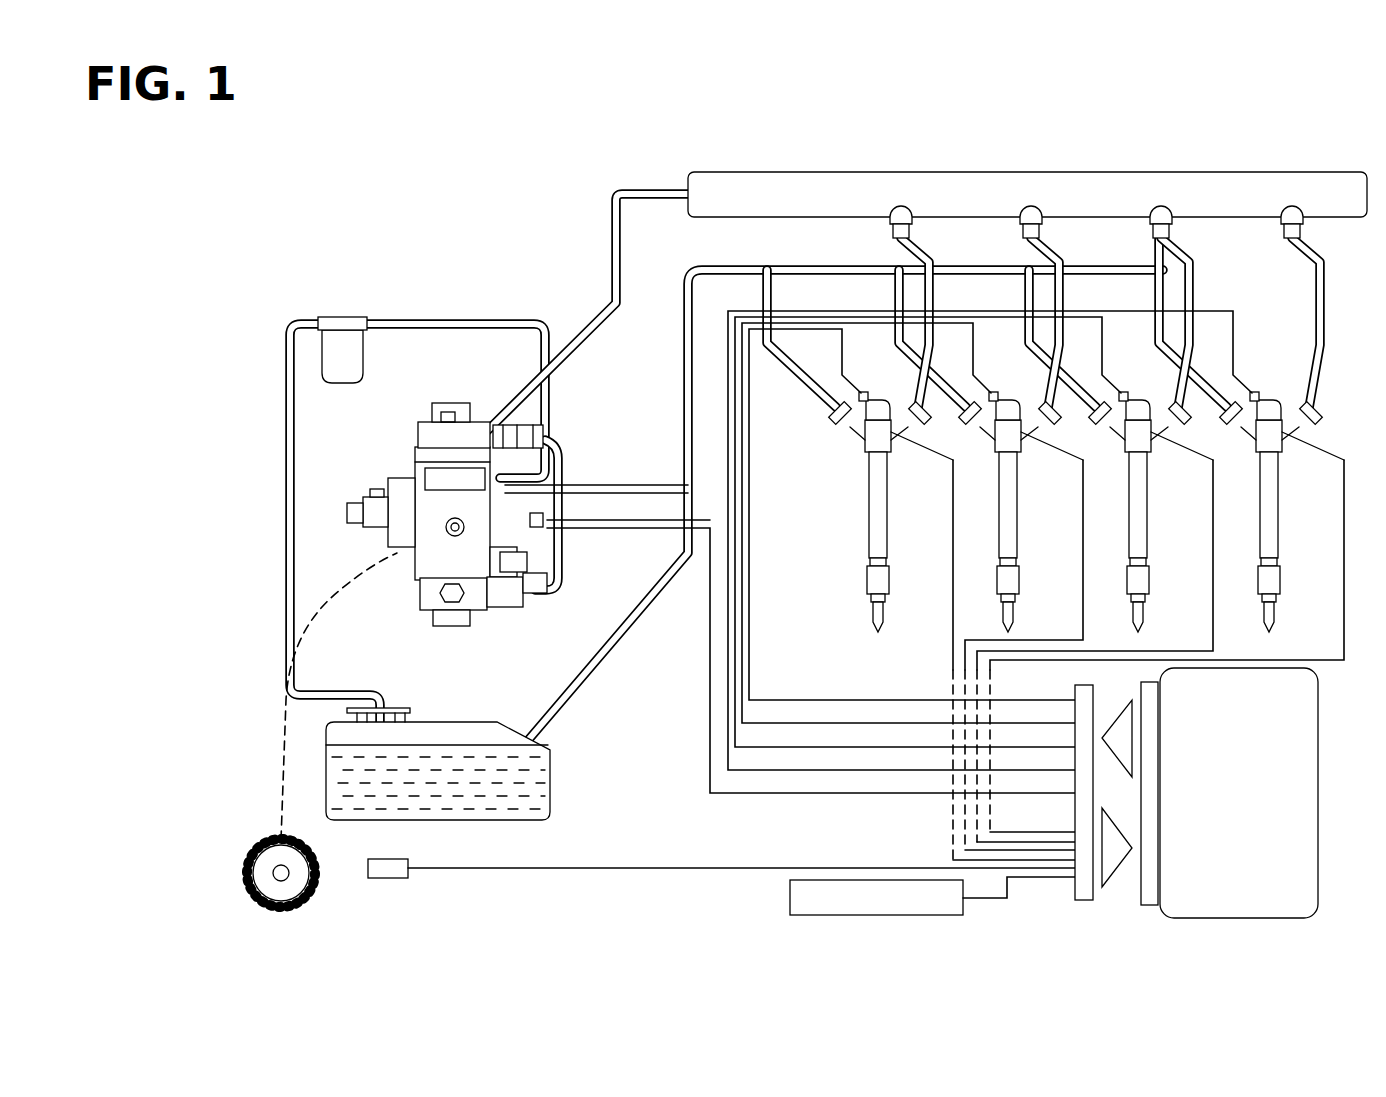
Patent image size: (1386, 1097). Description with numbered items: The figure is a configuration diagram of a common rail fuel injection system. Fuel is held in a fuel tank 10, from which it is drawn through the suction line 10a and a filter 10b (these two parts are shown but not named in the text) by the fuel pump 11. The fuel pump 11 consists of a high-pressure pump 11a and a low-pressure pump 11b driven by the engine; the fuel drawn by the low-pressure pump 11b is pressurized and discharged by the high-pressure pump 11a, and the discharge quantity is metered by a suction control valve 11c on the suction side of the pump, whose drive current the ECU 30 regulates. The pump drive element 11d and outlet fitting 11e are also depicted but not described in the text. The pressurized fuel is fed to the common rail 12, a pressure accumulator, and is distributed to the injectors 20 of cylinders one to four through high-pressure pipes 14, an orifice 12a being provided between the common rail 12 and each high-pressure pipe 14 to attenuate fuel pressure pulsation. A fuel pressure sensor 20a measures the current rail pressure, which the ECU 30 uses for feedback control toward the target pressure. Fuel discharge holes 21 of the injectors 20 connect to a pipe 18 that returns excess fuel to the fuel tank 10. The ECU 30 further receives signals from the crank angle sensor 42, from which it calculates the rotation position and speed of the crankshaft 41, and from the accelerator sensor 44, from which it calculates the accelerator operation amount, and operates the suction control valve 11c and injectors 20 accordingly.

The fuel tank 10 is at (474, 720).
The fuel suction pipe 10a is at (284, 500).
The fuel filter 10b is at (355, 350).
The fuel pump 11 is at (691, 576).
The high-pressure pump 11a is at (453, 410).
The low-pressure pump 11b is at (503, 512).
The suction control valve 11c is at (544, 521).
The pump drive shaft 11d is at (355, 505).
The pump discharge port 11e is at (480, 420).
The common rail 12 is at (1108, 188).
The orifice 12a is at (909, 230).
The high-pressure pipe 14 is at (938, 294).
The pipe 18 is at (741, 268).
The injector 20 is at (896, 495).
The fuel pressure sensor 20a is at (888, 401).
The fuel discharge hole 21 is at (835, 418).
The ECU 30 is at (1320, 790).
The crankshaft 41 is at (281, 880).
The crank angle sensor 42 is at (389, 882).
The accelerator sensor 44 is at (843, 918).